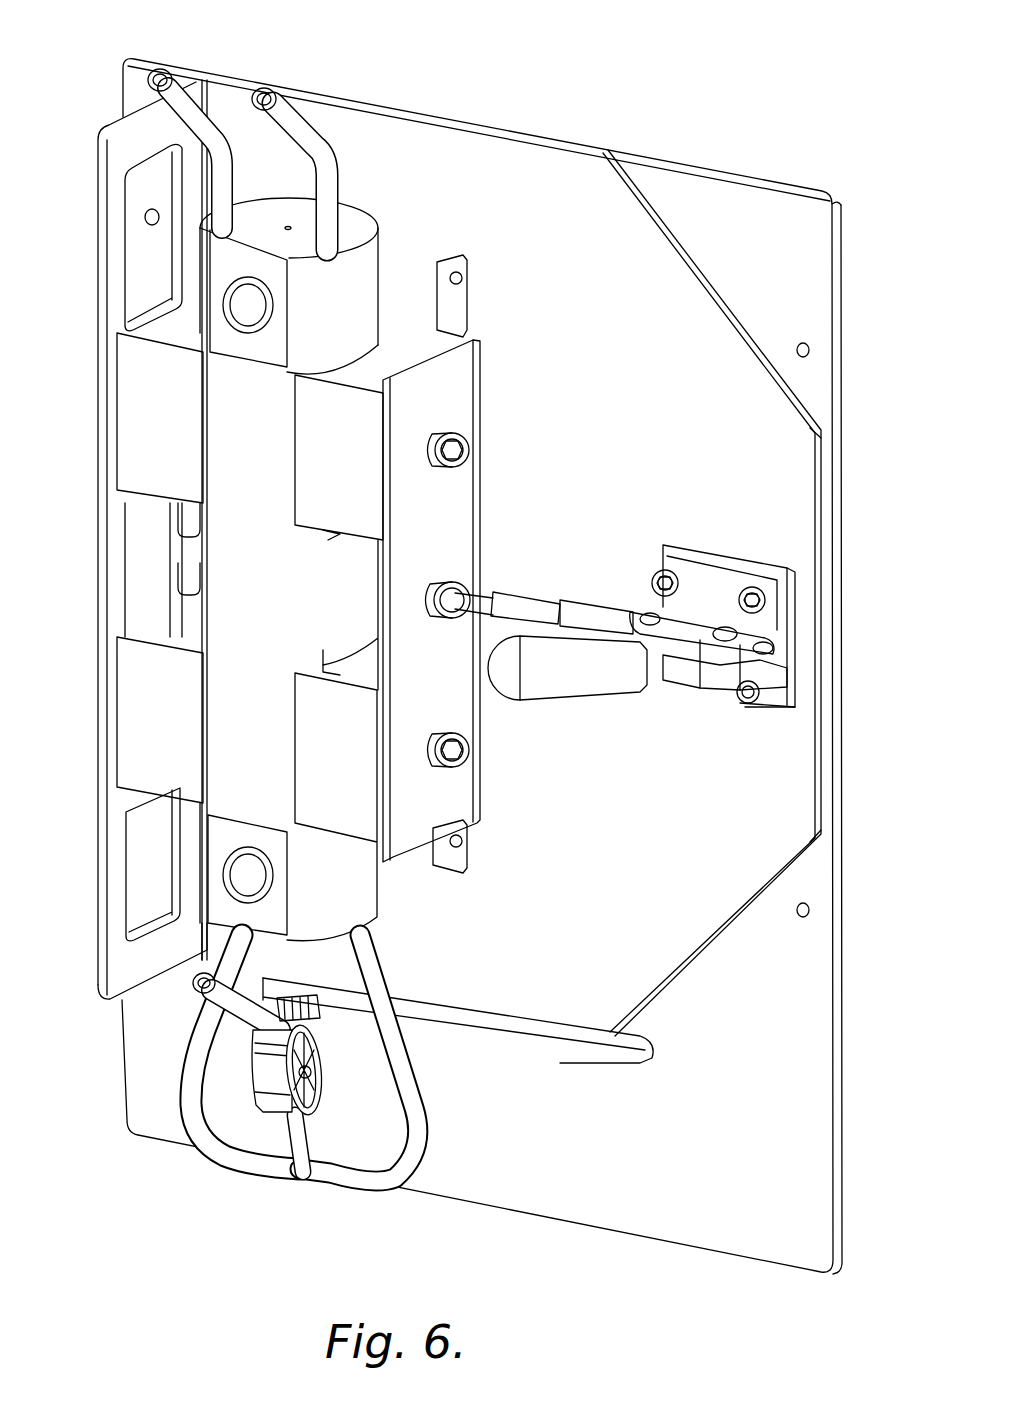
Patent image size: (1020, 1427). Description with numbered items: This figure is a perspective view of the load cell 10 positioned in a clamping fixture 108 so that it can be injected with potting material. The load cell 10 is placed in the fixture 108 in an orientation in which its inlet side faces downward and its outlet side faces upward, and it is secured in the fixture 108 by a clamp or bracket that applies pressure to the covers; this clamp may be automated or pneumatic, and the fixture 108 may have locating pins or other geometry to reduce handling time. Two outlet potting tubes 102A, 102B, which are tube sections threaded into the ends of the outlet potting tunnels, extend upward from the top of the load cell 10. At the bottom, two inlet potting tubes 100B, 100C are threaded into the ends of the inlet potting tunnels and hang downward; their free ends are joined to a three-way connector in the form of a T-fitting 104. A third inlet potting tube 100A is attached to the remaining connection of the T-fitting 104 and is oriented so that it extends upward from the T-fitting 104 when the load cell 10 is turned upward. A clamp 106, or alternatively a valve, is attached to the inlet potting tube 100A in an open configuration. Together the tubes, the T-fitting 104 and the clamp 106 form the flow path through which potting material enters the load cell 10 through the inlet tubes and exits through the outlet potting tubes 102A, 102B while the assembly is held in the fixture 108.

The load cell 10 is at (246, 601).
The fixture 108 is at (606, 122).
The outlet potting tube 102A is at (178, 93).
The outlet potting tube 102B is at (286, 126).
The inlet potting tube 100A is at (200, 1018).
The inlet potting tube 100B is at (213, 1142).
The inlet potting tube 100C is at (385, 1185).
The T-fitting 104 is at (305, 1170).
The clamp 106 is at (272, 1090).